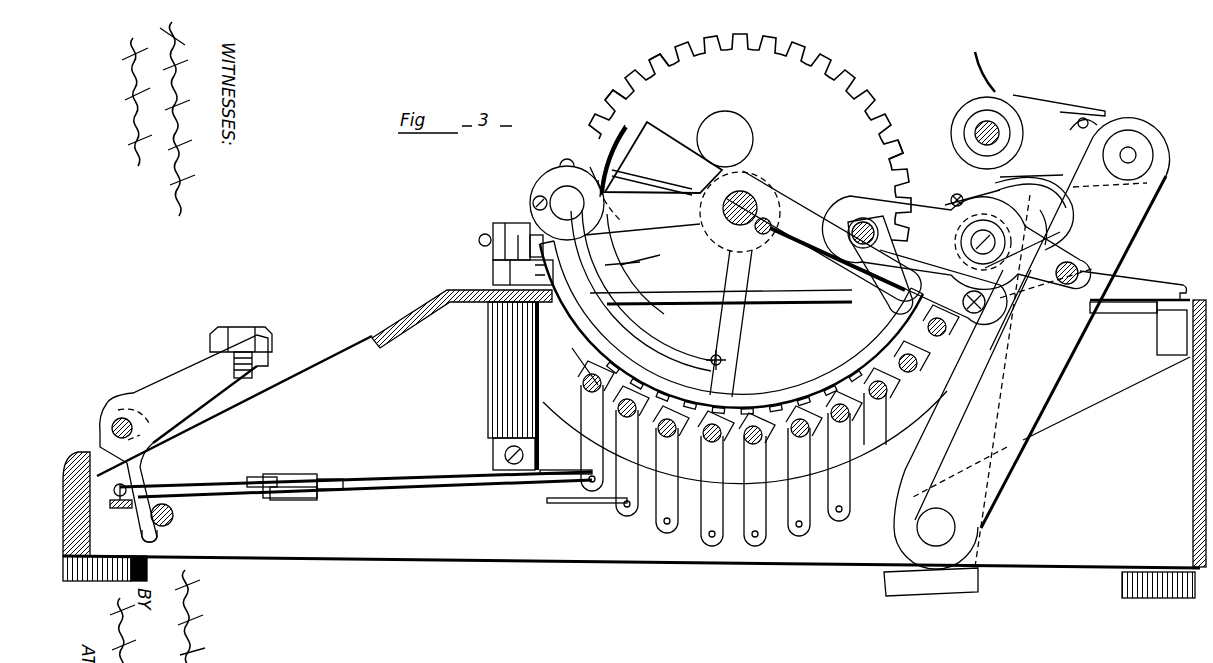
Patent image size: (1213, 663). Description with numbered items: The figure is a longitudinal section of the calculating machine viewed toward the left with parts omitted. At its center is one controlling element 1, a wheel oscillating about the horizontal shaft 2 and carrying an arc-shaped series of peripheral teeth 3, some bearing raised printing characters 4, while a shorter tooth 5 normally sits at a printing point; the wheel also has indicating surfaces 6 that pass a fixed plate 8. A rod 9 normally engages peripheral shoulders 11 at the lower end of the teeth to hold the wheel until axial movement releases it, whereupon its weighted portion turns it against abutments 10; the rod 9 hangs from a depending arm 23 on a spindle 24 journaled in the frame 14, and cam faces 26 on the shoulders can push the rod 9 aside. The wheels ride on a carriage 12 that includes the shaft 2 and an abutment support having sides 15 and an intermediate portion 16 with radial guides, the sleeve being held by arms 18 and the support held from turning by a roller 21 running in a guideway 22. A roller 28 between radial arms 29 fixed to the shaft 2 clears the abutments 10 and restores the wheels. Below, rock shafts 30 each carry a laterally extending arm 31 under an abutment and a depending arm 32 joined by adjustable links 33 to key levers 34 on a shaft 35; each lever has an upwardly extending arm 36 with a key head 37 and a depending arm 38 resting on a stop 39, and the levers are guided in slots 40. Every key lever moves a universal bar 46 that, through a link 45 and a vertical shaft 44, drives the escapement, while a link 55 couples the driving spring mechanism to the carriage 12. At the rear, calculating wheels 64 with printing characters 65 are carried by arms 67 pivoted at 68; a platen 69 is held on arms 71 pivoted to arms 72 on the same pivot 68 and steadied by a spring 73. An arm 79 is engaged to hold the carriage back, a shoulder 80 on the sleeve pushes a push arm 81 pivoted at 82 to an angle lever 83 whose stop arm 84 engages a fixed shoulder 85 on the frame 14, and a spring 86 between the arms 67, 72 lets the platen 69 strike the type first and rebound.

The controlling element 1 is at (826, 125).
The horizontal shaft 2 is at (765, 210).
The peripheral teeth 3 is at (630, 80).
The printing characters 4 is at (688, 42).
The short tooth 5 is at (900, 150).
The indicating surfaces 6 is at (612, 122).
The fixed plate 8 is at (604, 152).
The rod 9 is at (896, 296).
The abutments 10 is at (580, 355).
The peripheral shoulders 11 is at (966, 268).
The carriage 12 is at (625, 262).
The frame 14 is at (350, 340).
The sides 15 is at (765, 370).
The intermediate portion 16 is at (698, 395).
The arms 18 is at (655, 165).
The roller 21 is at (535, 281).
The guideway 22 is at (508, 266).
The depending arm 23 is at (840, 283).
The spindle 24 is at (858, 222).
The cam faces 26 is at (945, 235).
The roller 28 is at (660, 272).
The radial arms 29 is at (660, 262).
The rock shafts 30 is at (880, 455).
The laterally extending arm 31 is at (925, 338).
The depending arm 32 is at (828, 512).
The links 33 is at (400, 495).
The key levers 34 is at (160, 468).
The shaft 35 is at (115, 420).
The upwardly extending arms 36 is at (205, 372).
The key heads 37 is at (244, 332).
The depending arms 38 is at (158, 535).
The stop 39 is at (174, 514).
The slots 40 is at (100, 440).
The vertical shaft 44 is at (500, 410).
The link 45 is at (418, 478).
The universal bar 46 is at (120, 508).
The link 55 is at (720, 365).
The calculating wheels 64 is at (952, 195).
The printing characters 65 is at (1027, 182).
The arms 67 is at (955, 395).
The pivot 68 is at (936, 527).
The platen 69 is at (972, 96).
The arms 71 is at (1030, 110).
The arms 72 is at (1100, 232).
The spring 73 is at (1125, 120).
The arm 79 is at (870, 215).
The shoulder 80 is at (758, 230).
The push arm 81 is at (830, 240).
The pivot 82 is at (978, 312).
The angle lever 83 is at (1007, 293).
The stop arm 84 is at (1160, 286).
The fixed shoulder 85 is at (1147, 304).
The spring 86 is at (1058, 210).